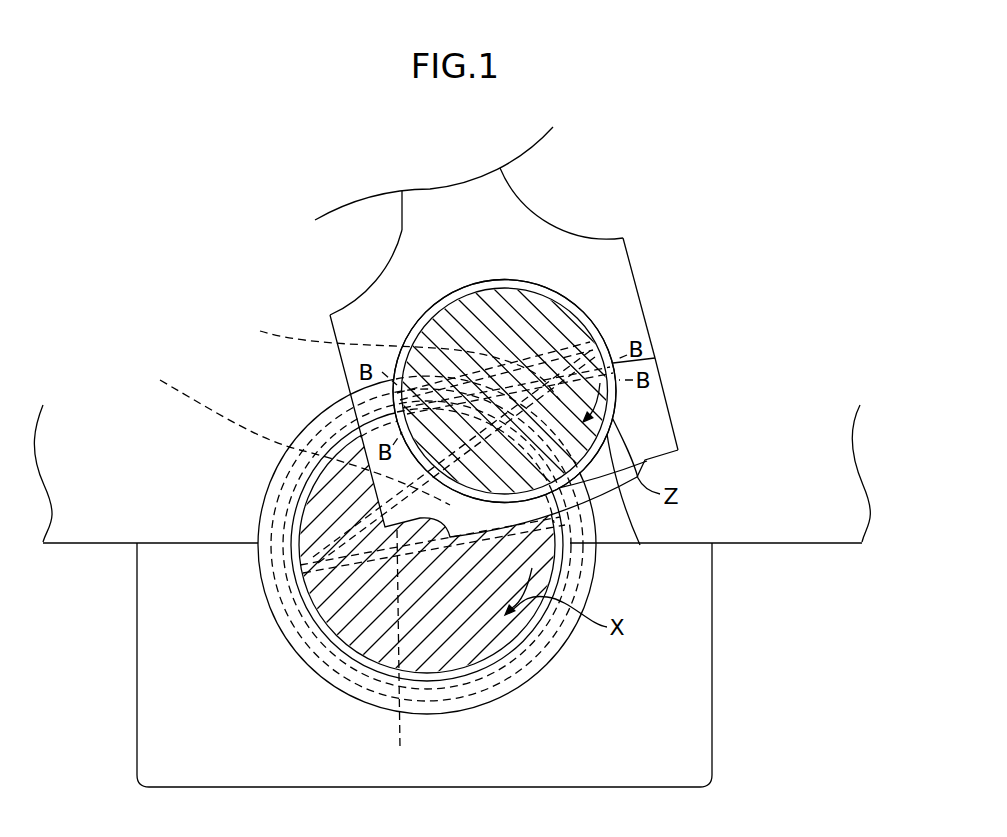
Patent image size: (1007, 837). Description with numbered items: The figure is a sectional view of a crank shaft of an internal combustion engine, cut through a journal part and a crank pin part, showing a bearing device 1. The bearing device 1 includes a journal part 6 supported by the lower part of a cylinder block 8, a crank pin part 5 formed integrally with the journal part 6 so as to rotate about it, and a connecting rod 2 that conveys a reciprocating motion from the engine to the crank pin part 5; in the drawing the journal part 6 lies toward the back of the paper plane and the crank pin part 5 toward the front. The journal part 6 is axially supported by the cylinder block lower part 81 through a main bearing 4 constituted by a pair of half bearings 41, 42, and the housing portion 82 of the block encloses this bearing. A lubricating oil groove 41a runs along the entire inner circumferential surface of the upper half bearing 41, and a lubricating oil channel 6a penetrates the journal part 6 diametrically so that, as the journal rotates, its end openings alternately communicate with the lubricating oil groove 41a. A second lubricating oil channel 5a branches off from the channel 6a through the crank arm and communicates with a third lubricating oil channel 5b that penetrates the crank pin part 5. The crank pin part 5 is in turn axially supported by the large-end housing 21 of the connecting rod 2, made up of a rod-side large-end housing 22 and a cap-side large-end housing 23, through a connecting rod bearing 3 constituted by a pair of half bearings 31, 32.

The bearing device 1 is at (140, 252).
The connecting rod 2 is at (402, 230).
The connecting rod bearing 3 is at (623, 411).
The main bearing 4 is at (354, 545).
The crank pin part 5 is at (530, 313).
The second lubricating oil channel 5a is at (288, 433).
The third lubricating oil channel 5b is at (392, 355).
The journal part 6 is at (327, 677).
The lubricating oil channel 6a is at (395, 652).
The cylinder block 8 is at (825, 577).
The large-end housing 21 is at (652, 262).
The rod-side large-end housing 22 is at (645, 310).
The cap-side large-end housing 23 is at (668, 393).
The half bearing 31 is at (465, 297).
The half bearing 32 is at (633, 548).
The half bearing 41 is at (270, 482).
The lubricating oil groove 41a is at (263, 523).
The half bearing 42 is at (277, 603).
The cylinder block lower part 81 is at (768, 531).
The base housing 82 is at (712, 717).